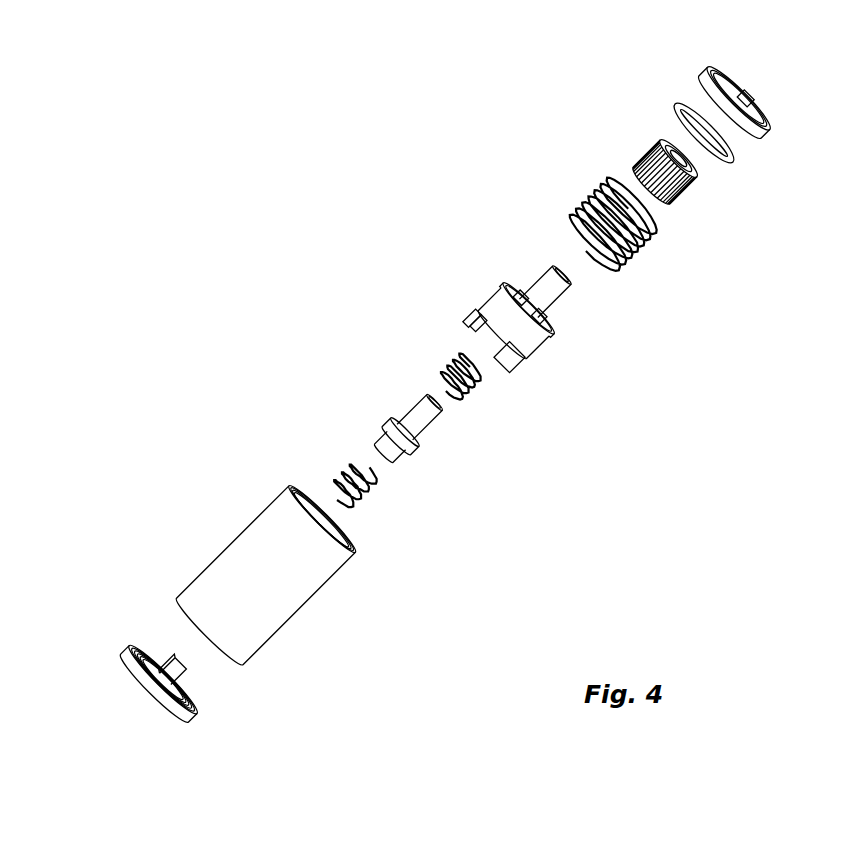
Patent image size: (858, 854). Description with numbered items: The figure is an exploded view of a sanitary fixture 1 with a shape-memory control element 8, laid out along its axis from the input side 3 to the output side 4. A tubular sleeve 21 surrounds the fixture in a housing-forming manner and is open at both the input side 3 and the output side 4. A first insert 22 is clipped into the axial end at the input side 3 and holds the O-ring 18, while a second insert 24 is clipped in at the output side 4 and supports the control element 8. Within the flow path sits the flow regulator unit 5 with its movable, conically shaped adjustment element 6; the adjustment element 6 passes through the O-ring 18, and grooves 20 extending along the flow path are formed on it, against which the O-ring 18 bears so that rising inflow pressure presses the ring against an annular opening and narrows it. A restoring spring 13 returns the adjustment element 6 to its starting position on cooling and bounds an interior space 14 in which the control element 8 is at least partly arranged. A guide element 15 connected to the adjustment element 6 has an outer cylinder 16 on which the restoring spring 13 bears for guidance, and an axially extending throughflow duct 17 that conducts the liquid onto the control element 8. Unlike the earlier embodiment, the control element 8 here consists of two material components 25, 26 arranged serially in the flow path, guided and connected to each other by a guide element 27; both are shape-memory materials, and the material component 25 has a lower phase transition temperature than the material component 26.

The sanitary fixture 1 is at (283, 213).
The input side 3 is at (784, 73).
The output side 4 is at (114, 693).
The flow regulator unit 5 is at (763, 170).
The adjustment element 6 is at (626, 151).
The control element 8 is at (500, 405).
The restoring spring 13 is at (638, 263).
The interior space 14 is at (653, 222).
The guide element 15 is at (525, 314).
The outer cylinder 16 is at (505, 342).
The throughflow duct 17 is at (530, 290).
The O-ring 18 is at (680, 100).
The grooves 20 is at (655, 155).
The tubular sleeve 21 is at (280, 605).
The first insert 22 is at (762, 103).
The second insert 24 is at (152, 695).
The material component 25 is at (457, 357).
The material component 26 is at (348, 465).
The guide element 27 is at (397, 427).